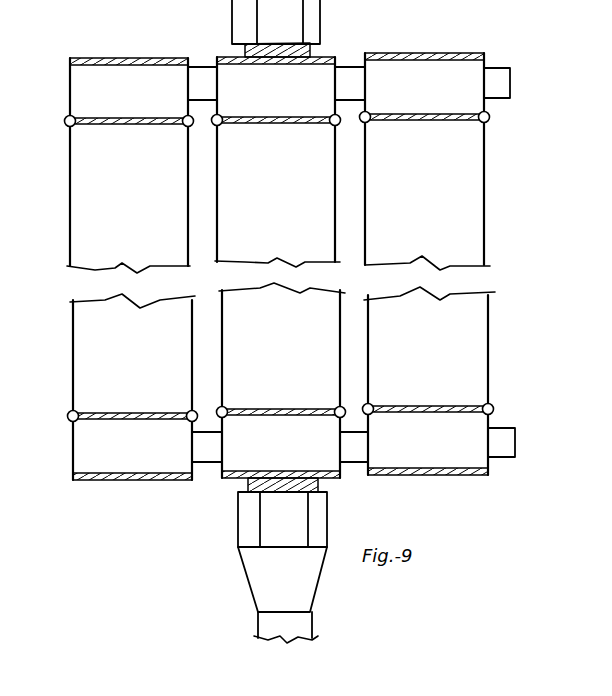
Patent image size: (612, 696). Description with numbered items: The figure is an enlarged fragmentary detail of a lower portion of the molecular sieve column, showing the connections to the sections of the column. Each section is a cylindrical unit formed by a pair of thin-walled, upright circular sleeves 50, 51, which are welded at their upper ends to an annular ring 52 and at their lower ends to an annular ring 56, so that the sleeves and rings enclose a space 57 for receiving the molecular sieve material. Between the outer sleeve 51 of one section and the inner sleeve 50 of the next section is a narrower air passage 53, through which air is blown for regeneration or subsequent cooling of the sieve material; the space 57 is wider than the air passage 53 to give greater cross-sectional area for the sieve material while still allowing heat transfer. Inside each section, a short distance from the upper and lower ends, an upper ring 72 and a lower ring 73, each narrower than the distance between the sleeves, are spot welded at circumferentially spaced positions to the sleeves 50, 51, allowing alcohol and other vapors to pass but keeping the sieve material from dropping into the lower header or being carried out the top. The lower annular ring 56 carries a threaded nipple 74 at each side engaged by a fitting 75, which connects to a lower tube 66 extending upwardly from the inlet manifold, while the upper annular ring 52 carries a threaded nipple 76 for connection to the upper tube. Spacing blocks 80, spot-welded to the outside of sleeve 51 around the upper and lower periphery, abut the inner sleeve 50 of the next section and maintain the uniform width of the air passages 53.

The upright circular sleeve 50 is at (71, 213).
The upright circular sleeve 51 is at (188, 218).
The annular ring 52 is at (139, 58).
The air passage 53 is at (208, 242).
The annular ring 56 is at (105, 483).
The enclosed space 57 is at (137, 157).
The lower tube 66 is at (314, 625).
The upper ring 72 is at (128, 118).
The lower ring 73 is at (132, 420).
The threaded nipple 74 is at (316, 483).
The fitting 75 is at (242, 562).
The threaded nipple 76 is at (312, 48).
The spacing block 80 is at (195, 88).